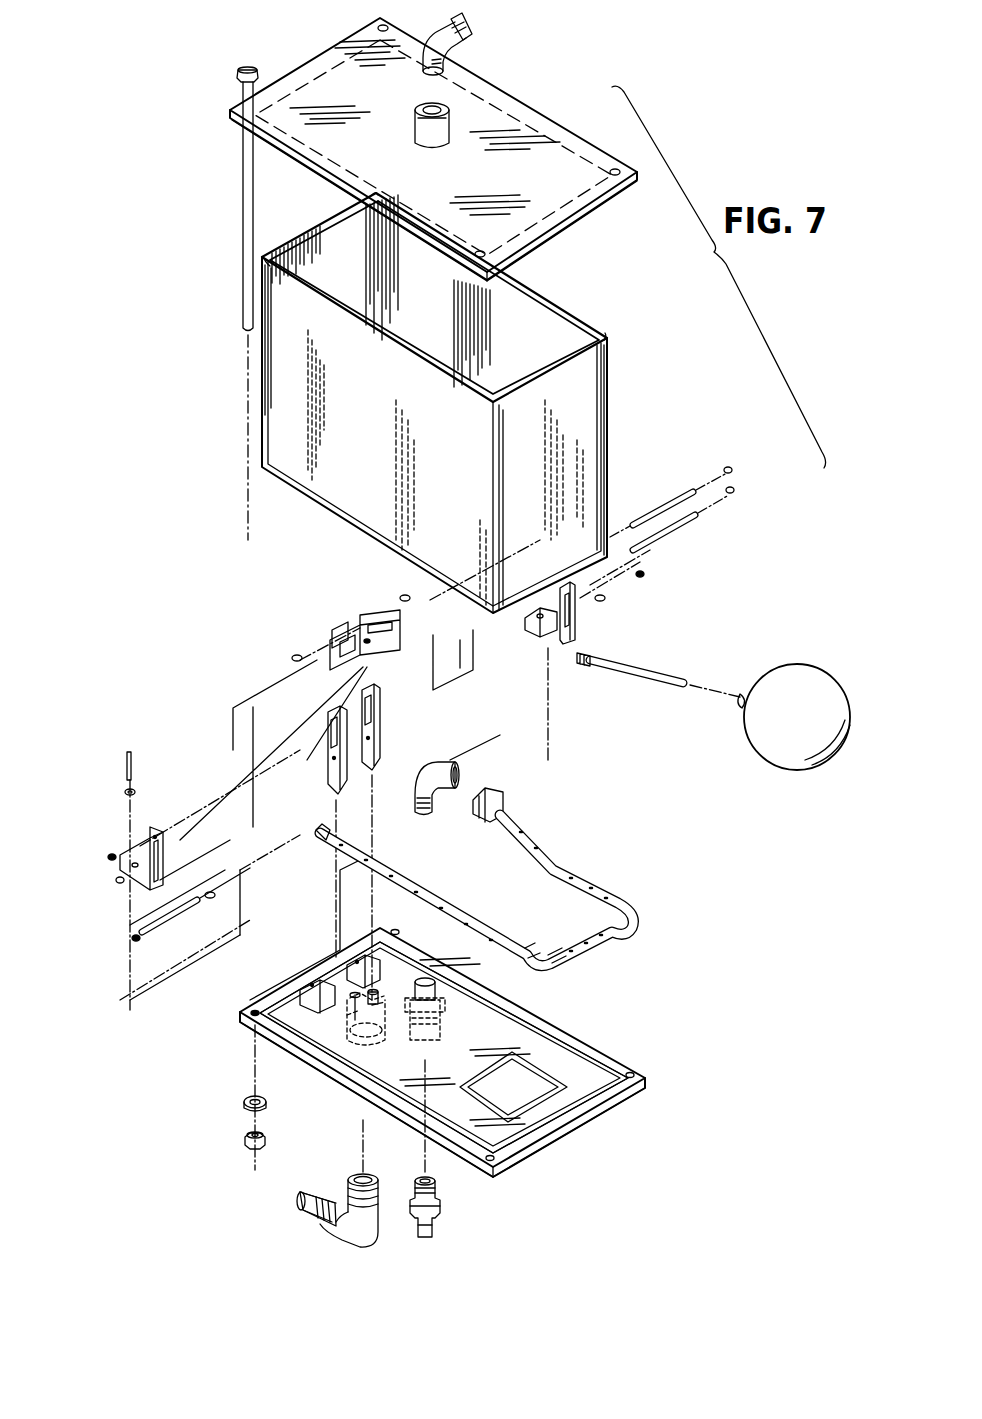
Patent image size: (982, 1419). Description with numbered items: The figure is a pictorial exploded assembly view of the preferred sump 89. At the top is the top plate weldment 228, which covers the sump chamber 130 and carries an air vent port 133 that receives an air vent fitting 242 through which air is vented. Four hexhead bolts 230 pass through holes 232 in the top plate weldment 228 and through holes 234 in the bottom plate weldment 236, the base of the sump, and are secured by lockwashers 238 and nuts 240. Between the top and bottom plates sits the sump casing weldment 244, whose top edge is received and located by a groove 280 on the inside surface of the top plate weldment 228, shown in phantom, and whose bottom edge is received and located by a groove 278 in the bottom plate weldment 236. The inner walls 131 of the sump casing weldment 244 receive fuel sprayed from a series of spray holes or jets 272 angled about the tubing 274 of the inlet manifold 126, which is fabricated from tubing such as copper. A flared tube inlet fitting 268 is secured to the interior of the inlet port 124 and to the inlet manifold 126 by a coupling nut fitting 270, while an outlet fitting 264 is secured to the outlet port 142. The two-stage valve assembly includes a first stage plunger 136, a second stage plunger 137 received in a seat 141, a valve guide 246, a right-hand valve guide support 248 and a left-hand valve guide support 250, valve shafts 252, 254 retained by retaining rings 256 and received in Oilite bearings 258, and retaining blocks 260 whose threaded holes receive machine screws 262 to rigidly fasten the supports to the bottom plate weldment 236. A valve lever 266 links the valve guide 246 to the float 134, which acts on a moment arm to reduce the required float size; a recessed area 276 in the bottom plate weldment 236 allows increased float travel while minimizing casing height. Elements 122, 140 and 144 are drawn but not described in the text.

The sump 89 is at (614, 395).
The drain fitting 122 is at (440, 1227).
The inlet port 124 is at (435, 1032).
The inlet manifold 126 is at (440, 917).
The sump chamber 130 is at (515, 305).
The inner walls 131 is at (305, 250).
The air vent port 133 is at (440, 112).
The float 134 is at (780, 687).
The first stage plunger 136 is at (376, 770).
The second stage plunger 137 is at (328, 772).
The fitting 140 is at (375, 990).
The seat 141 is at (352, 1012).
The outlet port 142 is at (376, 1042).
The elbow fitting 144 is at (298, 1198).
The top plate weldment 228 is at (530, 108).
The hexhead bolts 230 is at (243, 200).
The holes 232 is at (388, 28).
The holes 234 is at (395, 930).
The bottom plate weldment 236 is at (620, 1102).
The lockwashers 238 is at (268, 1106).
The nuts 240 is at (268, 1144).
The air vent fitting 242 is at (468, 30).
The sump casing weldment 244 is at (577, 463).
The valve guide 246 is at (335, 640).
The right-hand valve guide support 248 is at (577, 630).
The left-hand valve guide support 250 is at (655, 515).
The second valve shaft 252 is at (670, 538).
The third valve shaft 254 is at (168, 917).
The retaining rings 256 is at (733, 470).
The Oilite bearings 258 is at (606, 598).
The retaining blocks 260 is at (380, 964).
The machine screws 262 is at (133, 758).
The outlet fitting 264 is at (137, 792).
The valve lever 266 is at (648, 668).
The flared tube inlet fitting 268 is at (440, 764).
The coupling nut fitting 270 is at (368, 645).
The spray holes 272 is at (410, 874).
The tubing 274 is at (745, 695).
The recessed area 276 is at (478, 1097).
The groove 278 is at (578, 1047).
The groove 280 is at (272, 100).